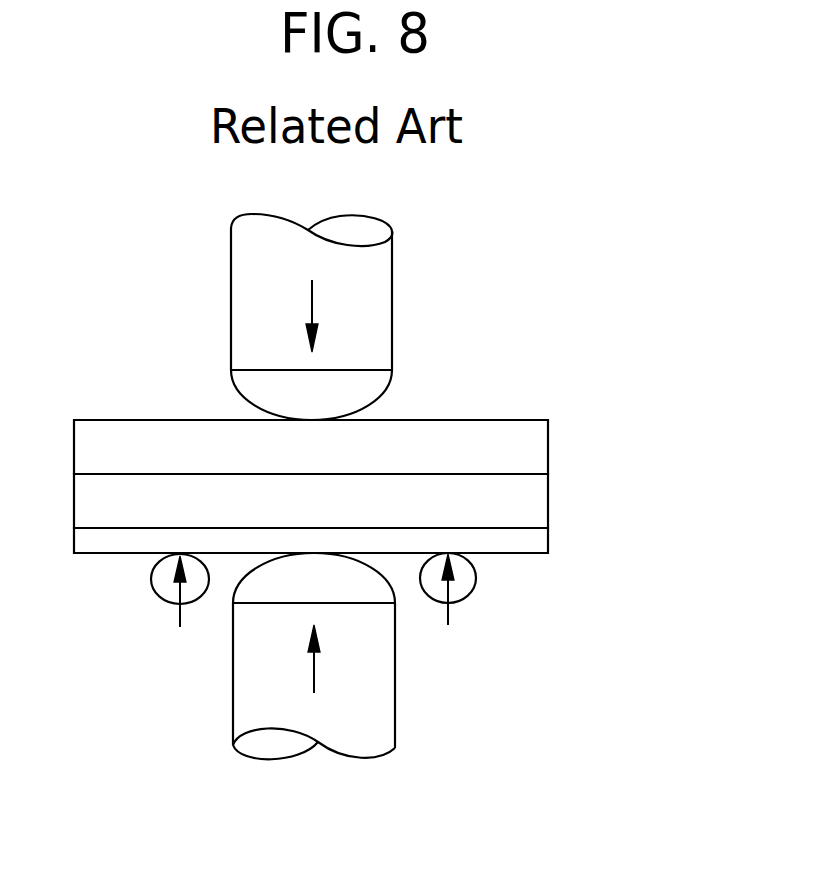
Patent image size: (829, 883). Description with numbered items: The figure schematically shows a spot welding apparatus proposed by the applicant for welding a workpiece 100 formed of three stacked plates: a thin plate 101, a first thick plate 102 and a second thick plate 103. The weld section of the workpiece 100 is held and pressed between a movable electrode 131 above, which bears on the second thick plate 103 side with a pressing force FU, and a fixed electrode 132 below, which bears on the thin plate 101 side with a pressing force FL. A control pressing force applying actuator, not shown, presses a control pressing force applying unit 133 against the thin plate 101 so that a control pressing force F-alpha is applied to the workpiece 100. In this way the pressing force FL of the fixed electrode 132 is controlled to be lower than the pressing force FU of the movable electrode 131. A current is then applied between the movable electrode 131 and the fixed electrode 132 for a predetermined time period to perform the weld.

The workpiece 100 is at (381, 420).
The thin plate 101 is at (527, 538).
The first thick plate 102 is at (527, 497).
The second thick plate 103 is at (527, 442).
The movable electrode 131 is at (376, 270).
The fixed electrode 132 is at (378, 717).
The control pressing force applying unit 133 is at (155, 579).